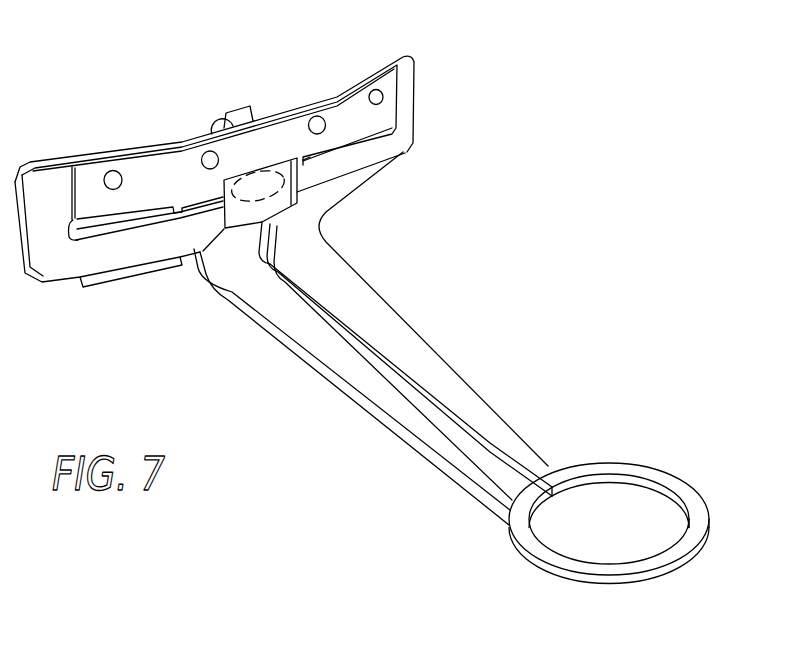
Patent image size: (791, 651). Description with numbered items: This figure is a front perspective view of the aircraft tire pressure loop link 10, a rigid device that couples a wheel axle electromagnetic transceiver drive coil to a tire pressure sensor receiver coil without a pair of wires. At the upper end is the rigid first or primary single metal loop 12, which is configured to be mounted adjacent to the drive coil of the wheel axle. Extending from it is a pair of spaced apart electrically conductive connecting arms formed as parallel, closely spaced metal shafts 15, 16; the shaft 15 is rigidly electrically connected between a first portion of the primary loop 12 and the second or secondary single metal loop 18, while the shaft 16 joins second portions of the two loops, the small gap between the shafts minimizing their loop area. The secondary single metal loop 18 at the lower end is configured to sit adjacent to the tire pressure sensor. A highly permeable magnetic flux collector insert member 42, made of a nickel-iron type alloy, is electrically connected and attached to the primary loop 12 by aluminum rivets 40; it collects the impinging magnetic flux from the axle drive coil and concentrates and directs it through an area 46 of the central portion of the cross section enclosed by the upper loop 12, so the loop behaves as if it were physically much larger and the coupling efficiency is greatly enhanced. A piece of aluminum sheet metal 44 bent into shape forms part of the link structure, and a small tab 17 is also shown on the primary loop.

The aircraft tire pressure loop link 10 is at (560, 259).
The first or primary single metal loop 12 is at (214, 171).
The metal shaft 15 is at (390, 322).
The metal shaft 16 is at (356, 370).
The tab 17 is at (227, 115).
The second or secondary single metal loop 18 is at (492, 566).
The aluminum rivet 40 is at (113, 170).
The magnetic flux collector insert member 42 is at (152, 167).
The piece of aluminum sheet metal 44 is at (437, 371).
The area of a central portion of the cross sectional area 46 is at (285, 186).